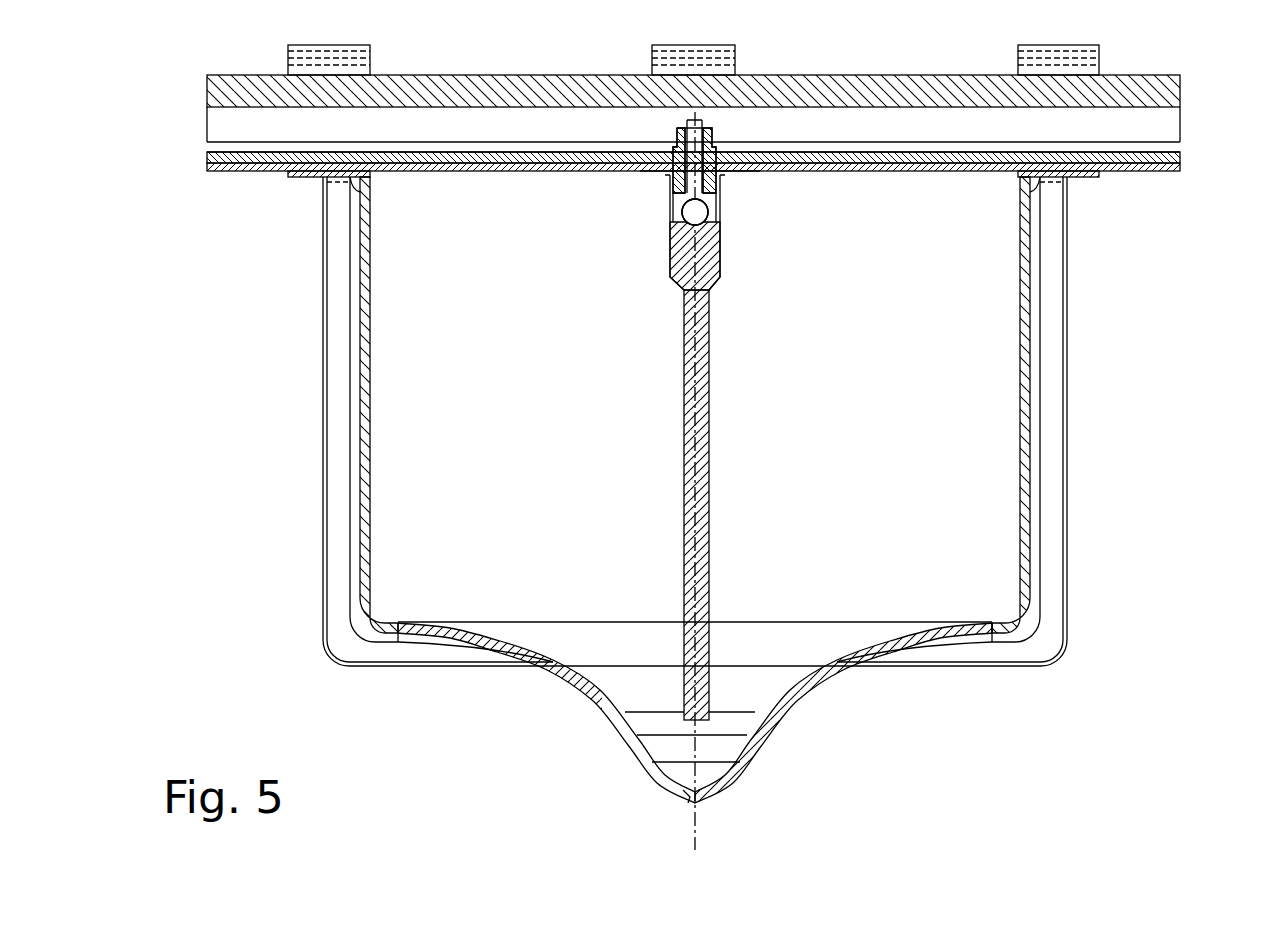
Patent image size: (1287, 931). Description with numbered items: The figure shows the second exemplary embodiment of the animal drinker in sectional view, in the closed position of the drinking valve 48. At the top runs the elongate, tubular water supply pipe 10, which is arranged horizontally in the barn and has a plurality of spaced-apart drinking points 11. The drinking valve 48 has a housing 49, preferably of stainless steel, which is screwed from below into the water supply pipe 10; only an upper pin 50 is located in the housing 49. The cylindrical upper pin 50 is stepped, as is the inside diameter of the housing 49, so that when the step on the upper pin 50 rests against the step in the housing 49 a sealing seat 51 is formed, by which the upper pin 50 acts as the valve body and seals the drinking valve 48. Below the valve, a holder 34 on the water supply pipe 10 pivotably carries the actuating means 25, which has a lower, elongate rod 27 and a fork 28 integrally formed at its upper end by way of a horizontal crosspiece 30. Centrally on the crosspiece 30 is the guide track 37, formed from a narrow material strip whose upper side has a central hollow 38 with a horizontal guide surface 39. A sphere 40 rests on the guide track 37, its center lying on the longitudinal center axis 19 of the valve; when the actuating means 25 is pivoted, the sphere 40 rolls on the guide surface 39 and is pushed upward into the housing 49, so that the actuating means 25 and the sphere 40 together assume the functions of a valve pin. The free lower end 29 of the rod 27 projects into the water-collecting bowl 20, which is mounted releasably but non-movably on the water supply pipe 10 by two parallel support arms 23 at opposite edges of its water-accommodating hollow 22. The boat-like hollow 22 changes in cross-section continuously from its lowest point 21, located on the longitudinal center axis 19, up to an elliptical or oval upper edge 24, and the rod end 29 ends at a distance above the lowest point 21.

The water supply pipe 10 is at (1158, 128).
The drinking point 11 is at (278, 327).
The longitudinal center axis 19 is at (700, 834).
The water-collecting bowl 20 is at (826, 606).
The lowest point 21 is at (672, 787).
The water-accommodating hollow 22 is at (800, 685).
The support arm 23 is at (365, 535).
The upper edge 24 is at (878, 622).
The actuating means 25 is at (590, 460).
The rod 27 is at (710, 565).
The fork 28 is at (664, 266).
The free lower end 29 is at (688, 725).
The crosspiece 30 is at (680, 238).
The holder 34 is at (712, 63).
The guide track 37 is at (702, 224).
The central hollow 38 is at (695, 212).
The guide surface 39 is at (678, 223).
The sphere 40 is at (706, 208).
The drinking valve 48 is at (632, 190).
The housing 49 is at (714, 160).
The upper pin 50 is at (686, 137).
The sealing seat 51 is at (676, 157).